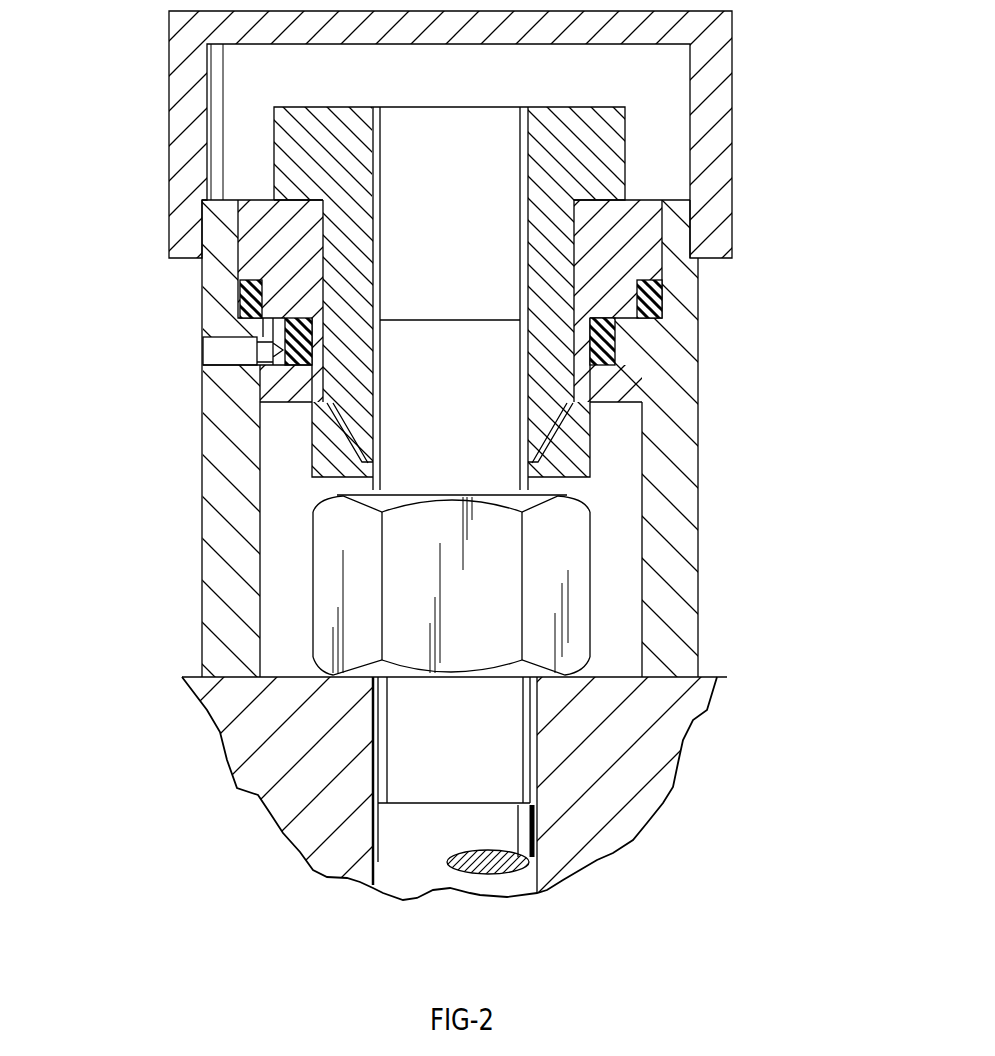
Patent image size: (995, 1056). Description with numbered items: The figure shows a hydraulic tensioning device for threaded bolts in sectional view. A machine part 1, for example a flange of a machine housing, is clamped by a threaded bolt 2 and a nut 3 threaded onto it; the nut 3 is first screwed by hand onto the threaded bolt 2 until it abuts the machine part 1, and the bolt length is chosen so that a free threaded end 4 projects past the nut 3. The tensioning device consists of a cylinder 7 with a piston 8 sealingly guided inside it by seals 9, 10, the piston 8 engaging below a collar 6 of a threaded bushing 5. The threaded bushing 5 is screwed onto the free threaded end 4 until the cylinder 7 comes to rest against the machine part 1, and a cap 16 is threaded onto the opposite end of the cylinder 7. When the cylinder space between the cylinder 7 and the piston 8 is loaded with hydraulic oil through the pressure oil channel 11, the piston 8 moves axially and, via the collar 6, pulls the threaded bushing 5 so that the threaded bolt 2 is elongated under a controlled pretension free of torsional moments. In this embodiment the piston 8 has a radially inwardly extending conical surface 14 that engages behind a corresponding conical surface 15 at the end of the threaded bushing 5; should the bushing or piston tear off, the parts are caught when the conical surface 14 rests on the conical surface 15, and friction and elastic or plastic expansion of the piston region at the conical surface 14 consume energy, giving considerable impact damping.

The machine part 1 is at (653, 765).
The threaded bolt 2 is at (505, 827).
The nut 3 is at (567, 607).
The free threaded end 4 is at (490, 385).
The threaded bushing 5 is at (552, 255).
The collar 6 is at (610, 150).
The cylinder 7 is at (670, 468).
The piston 8 is at (285, 309).
The seal 9 is at (253, 292).
The seal 10 is at (280, 363).
The pressure oil channel 11 is at (218, 348).
The conical surface 14 is at (338, 457).
The conical surface 15 is at (352, 418).
The cap 16 is at (715, 55).